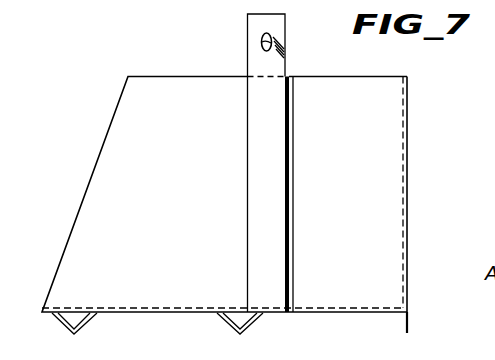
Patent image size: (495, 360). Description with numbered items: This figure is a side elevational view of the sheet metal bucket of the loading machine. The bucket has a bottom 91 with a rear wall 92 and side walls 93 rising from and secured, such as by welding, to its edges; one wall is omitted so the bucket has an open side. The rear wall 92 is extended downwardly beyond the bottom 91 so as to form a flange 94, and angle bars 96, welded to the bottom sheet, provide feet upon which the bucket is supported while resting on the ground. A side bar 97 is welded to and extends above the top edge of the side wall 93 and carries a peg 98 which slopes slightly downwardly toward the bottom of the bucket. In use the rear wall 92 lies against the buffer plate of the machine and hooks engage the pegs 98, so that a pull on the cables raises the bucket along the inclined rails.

The bottom 91 is at (163, 308).
The rear wall 92 is at (403, 191).
The side walls 93 is at (183, 158).
The flange 94 is at (408, 319).
The angle bars 96 is at (88, 321).
The side bars 97 is at (252, 168).
The peg 98 is at (262, 39).